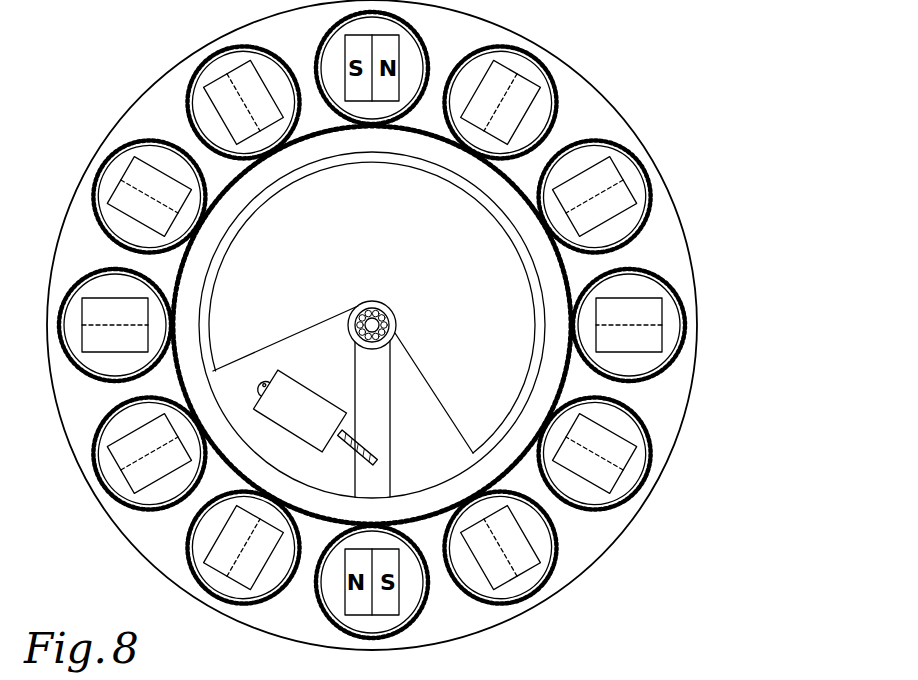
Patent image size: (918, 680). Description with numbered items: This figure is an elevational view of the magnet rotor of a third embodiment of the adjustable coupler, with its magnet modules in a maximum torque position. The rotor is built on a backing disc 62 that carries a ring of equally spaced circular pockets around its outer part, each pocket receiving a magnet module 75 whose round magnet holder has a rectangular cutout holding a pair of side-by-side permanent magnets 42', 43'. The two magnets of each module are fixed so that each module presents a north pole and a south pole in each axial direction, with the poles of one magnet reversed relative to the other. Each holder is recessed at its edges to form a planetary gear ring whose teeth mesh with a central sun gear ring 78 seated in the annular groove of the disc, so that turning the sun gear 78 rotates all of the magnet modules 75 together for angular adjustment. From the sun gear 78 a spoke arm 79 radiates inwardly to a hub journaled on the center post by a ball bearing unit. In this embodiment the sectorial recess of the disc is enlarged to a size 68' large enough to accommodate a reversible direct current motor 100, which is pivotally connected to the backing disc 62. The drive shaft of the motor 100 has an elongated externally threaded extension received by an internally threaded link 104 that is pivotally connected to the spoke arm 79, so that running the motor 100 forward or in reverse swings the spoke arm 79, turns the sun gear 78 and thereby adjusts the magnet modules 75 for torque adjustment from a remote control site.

The backing disc 62 is at (588, 553).
The sun gear ring 78 is at (497, 192).
The enlarged recess 68' is at (372, 329).
The spoke arm 79 is at (383, 363).
The reversible direct current motor 100 is at (311, 400).
The internally threaded link 104 is at (353, 441).
The magnet module 75 is at (183, 534).
The permanent magnet 42' is at (598, 470).
The permanent magnet 43' is at (647, 454).